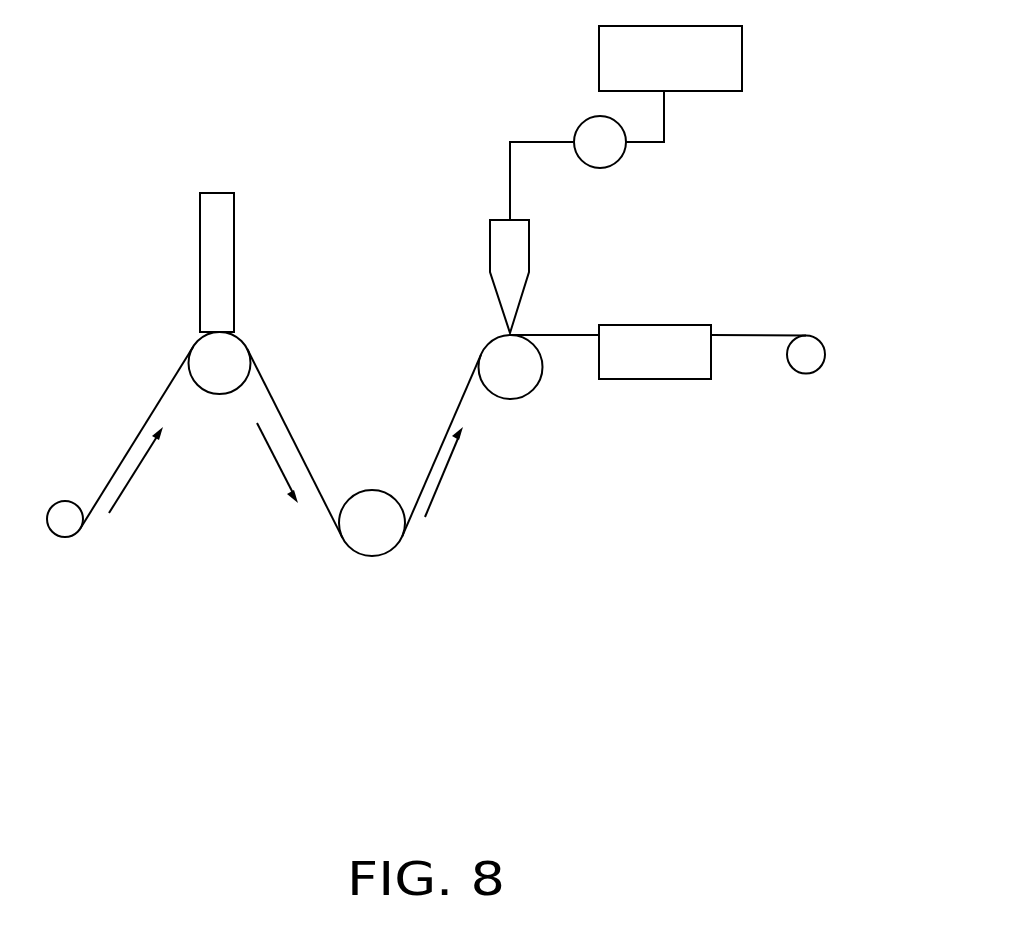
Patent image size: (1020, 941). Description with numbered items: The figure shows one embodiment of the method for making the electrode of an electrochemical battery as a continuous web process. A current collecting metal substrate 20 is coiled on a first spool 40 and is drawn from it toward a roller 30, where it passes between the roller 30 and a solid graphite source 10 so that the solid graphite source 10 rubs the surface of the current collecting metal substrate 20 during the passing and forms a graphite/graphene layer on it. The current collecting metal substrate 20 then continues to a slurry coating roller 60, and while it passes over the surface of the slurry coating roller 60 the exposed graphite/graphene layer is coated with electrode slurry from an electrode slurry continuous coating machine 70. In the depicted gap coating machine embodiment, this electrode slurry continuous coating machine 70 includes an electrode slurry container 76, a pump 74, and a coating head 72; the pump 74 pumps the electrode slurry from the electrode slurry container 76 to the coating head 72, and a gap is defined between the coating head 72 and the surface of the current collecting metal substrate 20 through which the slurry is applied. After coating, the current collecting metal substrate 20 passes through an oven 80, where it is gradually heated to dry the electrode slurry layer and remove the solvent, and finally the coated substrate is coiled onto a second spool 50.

The solid graphite source 10 is at (215, 265).
The current collecting metal substrate 20 is at (148, 417).
The roller 30 is at (205, 353).
The first spool 40 is at (73, 511).
The second spool 50 is at (812, 367).
The slurry coating roller 60 is at (513, 385).
The electrode slurry continuous coating machine 70 is at (638, 179).
The coating head 72 is at (515, 250).
The pump 74 is at (607, 155).
The electrode slurry container 76 is at (705, 80).
The oven 80 is at (687, 368).